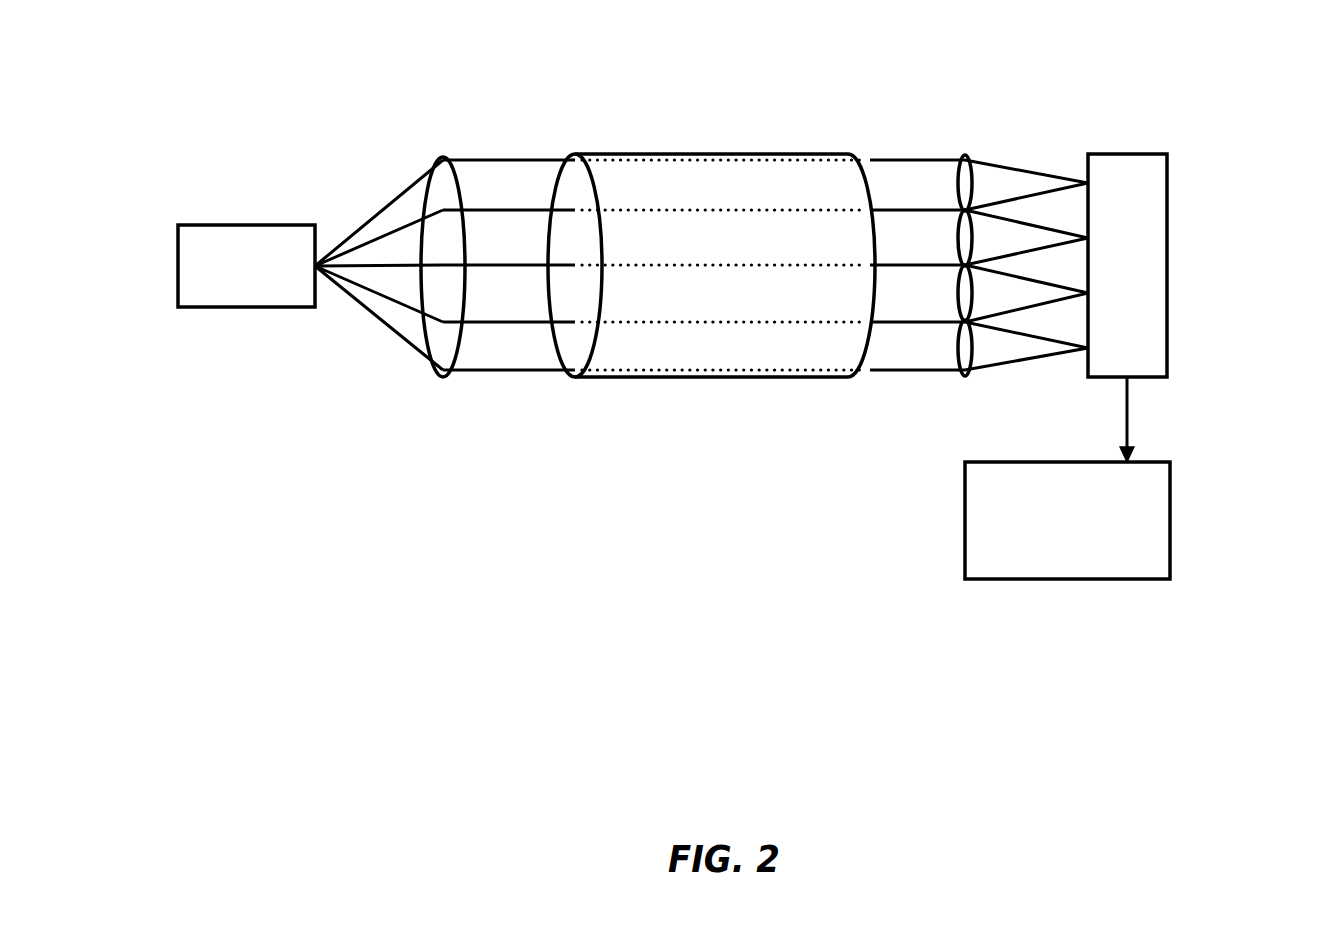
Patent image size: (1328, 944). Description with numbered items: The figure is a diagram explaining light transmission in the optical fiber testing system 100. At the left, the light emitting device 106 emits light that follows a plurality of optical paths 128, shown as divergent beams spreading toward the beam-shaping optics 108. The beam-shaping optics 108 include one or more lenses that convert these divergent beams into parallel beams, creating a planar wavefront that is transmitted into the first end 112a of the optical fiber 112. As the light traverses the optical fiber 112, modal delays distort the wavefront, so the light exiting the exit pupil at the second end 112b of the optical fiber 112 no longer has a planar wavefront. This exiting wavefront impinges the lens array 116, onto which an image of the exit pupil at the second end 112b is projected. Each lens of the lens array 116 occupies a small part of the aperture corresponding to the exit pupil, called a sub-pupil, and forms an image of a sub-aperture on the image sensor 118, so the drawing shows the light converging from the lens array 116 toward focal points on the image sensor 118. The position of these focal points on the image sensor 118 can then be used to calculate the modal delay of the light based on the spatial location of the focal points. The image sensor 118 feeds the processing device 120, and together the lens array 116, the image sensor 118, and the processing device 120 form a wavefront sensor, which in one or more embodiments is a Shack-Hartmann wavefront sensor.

The optical fiber testing system 100 is at (1172, 94).
The light emitting device 106 is at (177, 272).
The beam-shaping optics 108 is at (442, 157).
The optical fiber 112 is at (722, 238).
The first end of the optical fiber 112a is at (580, 343).
The second end of the optical fiber 112b is at (868, 345).
The lens array 116 is at (965, 155).
The image sensor 118 is at (1167, 270).
The processing device 120 is at (1170, 522).
The optical paths 128 is at (371, 205).